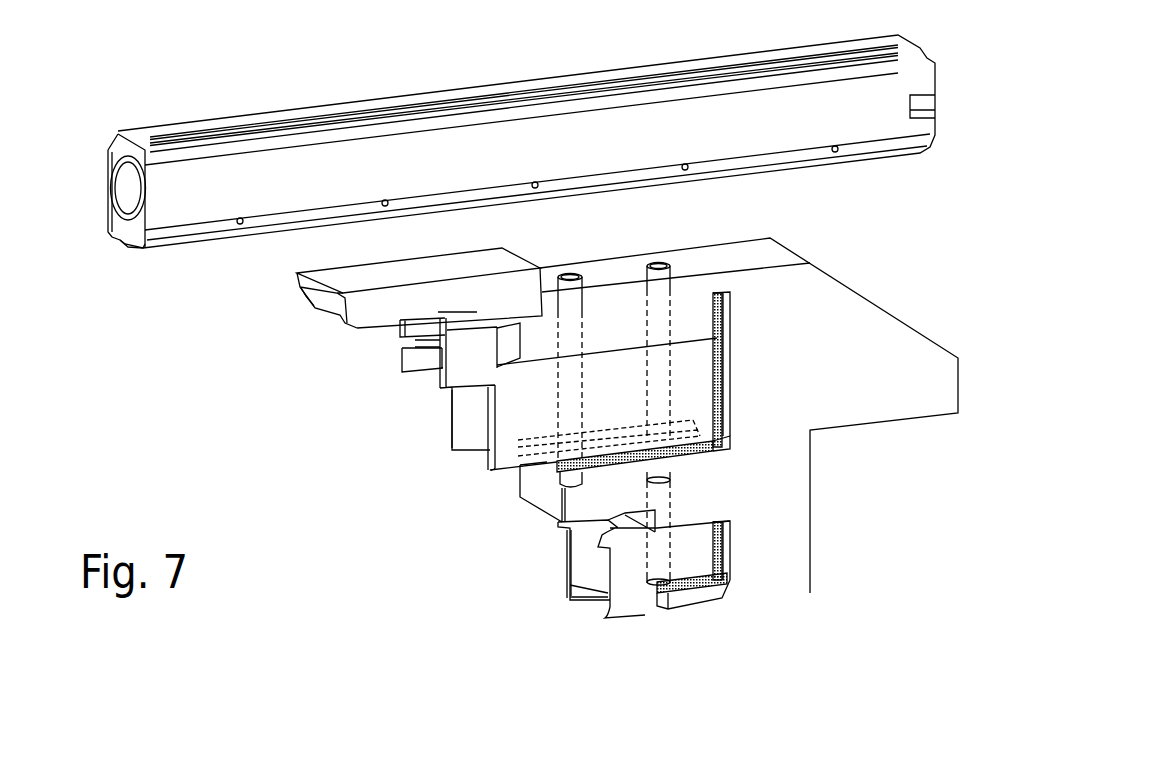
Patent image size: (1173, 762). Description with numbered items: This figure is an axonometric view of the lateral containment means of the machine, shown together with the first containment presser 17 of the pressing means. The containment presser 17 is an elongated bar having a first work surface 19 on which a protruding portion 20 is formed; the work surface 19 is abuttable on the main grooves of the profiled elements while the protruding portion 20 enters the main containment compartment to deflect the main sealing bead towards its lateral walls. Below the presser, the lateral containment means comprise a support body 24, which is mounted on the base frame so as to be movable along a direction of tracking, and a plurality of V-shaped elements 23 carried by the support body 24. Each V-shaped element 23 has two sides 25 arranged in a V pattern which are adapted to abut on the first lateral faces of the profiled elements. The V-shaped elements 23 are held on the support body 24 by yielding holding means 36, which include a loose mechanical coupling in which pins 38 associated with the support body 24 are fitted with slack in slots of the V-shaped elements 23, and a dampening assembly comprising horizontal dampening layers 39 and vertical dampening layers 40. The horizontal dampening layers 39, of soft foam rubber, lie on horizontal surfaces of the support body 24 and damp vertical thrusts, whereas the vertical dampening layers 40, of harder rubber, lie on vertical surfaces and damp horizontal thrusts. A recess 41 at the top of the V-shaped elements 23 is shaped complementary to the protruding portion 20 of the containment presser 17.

The first containment presser 17 is at (203, 185).
The first work surface 19 is at (123, 243).
The protruding portion 20 is at (128, 250).
The V-shaped element 23 is at (373, 308).
The support body 24 is at (877, 345).
The sides 25 is at (305, 298).
The yielding holding means 36 is at (672, 258).
The pin 38 is at (660, 262).
The horizontal dampening layer 39 is at (560, 470).
The vertical dampening layer 40 is at (733, 418).
The recess 41 is at (430, 272).